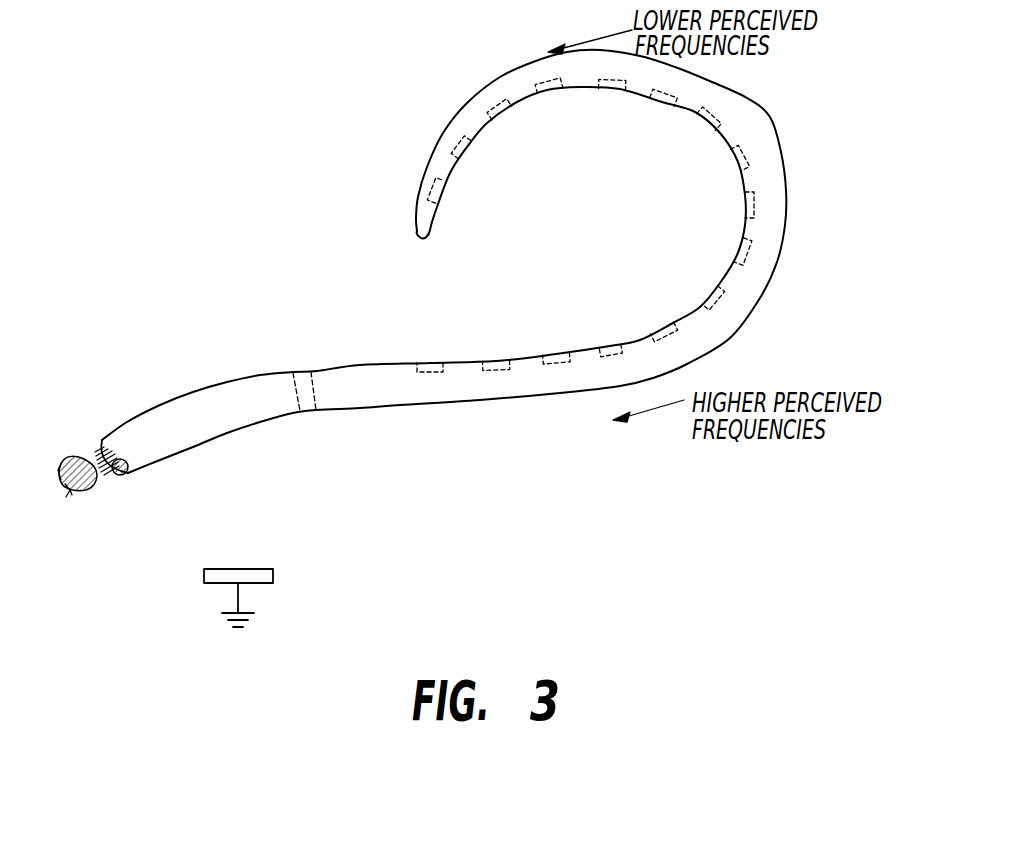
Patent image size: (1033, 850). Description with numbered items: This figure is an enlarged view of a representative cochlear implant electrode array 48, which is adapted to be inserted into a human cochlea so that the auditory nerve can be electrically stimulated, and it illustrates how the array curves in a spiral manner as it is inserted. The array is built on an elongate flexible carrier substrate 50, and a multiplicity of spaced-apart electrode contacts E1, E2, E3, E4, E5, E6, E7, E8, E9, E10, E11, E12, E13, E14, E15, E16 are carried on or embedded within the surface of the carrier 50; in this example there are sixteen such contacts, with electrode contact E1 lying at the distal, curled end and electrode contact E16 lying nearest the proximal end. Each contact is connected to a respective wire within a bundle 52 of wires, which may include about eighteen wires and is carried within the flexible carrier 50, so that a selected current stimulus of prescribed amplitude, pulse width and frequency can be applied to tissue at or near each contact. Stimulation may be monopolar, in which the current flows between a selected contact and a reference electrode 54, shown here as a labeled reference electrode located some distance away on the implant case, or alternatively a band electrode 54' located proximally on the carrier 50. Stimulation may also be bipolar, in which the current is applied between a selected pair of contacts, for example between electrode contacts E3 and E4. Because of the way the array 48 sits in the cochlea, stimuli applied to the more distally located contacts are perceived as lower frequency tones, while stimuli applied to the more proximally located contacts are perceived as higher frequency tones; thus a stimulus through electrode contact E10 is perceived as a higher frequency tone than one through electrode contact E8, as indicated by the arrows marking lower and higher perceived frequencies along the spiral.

The cochlear implant electrode array 48 is at (501, 254).
The elongate flexible carrier substrate 50 is at (360, 364).
The bundle of wires 52 is at (90, 492).
The reference electrode 54 is at (212, 569).
The band electrode 54' is at (332, 428).
The electrode contact E1 is at (452, 198).
The electrode contact E2 is at (471, 157).
The electrode contact E3 is at (504, 122).
The electrode contact E4 is at (549, 102).
The electrode contact E5 is at (610, 97).
The electrode contact E6 is at (656, 108).
The electrode contact E7 is at (698, 127).
The electrode contact E8 is at (730, 166).
The electrode contact E9 is at (736, 208).
The electrode contact E10 is at (726, 249).
The electrode contact E11 is at (701, 288).
The electrode contact E12 is at (659, 318).
The electrode contact E13 is at (612, 336).
The electrode contact E14 is at (557, 347).
The electrode contact E15 is at (497, 350).
The electrode contact E16 is at (430, 353).